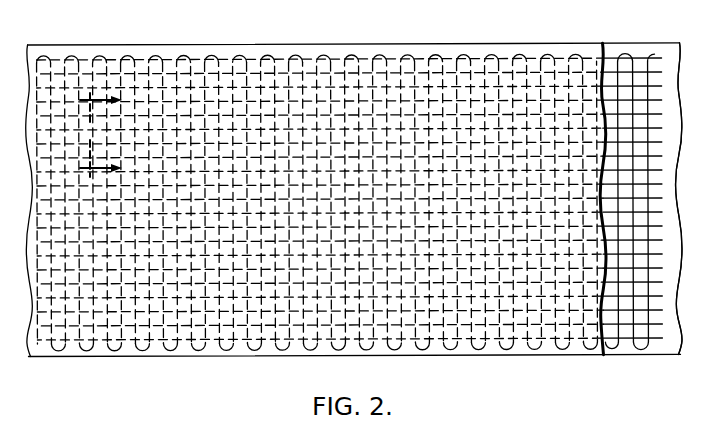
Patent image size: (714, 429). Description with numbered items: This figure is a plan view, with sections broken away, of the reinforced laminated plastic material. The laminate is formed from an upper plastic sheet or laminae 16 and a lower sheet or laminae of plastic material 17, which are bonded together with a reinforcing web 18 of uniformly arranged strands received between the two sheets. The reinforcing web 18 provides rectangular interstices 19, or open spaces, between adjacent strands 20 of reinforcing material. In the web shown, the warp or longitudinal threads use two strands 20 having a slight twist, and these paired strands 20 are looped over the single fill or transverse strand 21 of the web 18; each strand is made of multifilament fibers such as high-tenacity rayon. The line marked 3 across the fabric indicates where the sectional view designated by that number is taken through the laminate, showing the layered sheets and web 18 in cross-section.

The upper plastic sheet or laminae 16 is at (518, 337).
The lower sheet or laminae of plastic material 17 is at (667, 328).
The reinforcing web 18 is at (625, 56).
The interstices 19 is at (132, 335).
The strands 20 is at (222, 338).
The fill or transverse strand 21 is at (302, 333).
The section line 3- 3 is at (109, 134).